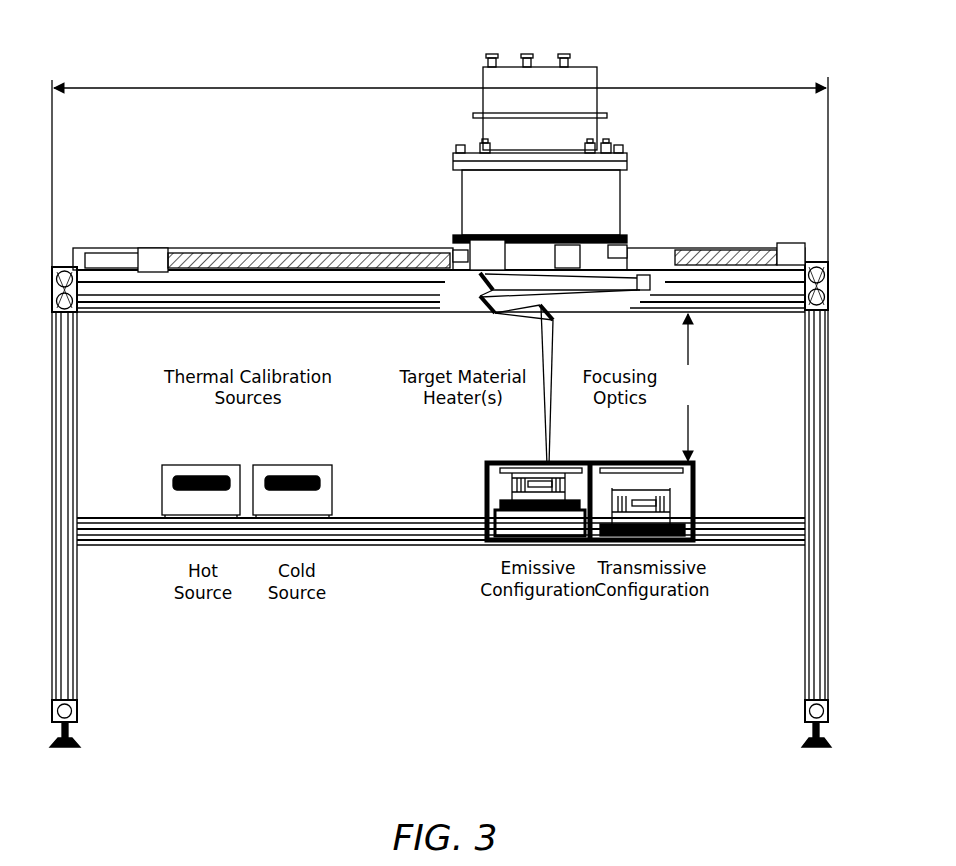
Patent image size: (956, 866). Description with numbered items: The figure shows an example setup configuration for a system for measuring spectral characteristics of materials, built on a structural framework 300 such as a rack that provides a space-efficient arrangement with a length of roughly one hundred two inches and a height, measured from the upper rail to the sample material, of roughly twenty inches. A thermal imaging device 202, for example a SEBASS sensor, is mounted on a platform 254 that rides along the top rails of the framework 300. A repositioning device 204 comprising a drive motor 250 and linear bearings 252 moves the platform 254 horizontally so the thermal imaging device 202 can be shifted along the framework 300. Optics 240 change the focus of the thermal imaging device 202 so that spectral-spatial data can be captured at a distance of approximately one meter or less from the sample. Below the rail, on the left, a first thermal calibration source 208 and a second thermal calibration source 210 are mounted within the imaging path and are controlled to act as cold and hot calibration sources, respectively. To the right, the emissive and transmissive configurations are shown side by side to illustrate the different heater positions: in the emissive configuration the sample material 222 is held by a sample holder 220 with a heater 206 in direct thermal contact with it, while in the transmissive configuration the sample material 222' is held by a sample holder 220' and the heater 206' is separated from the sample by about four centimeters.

The structural framework 300 is at (248, 48).
The repositioning device 204 is at (261, 175).
The bearings 252 is at (318, 248).
The platform 254 is at (626, 230).
The drive motor 250 is at (633, 180).
The thermal imaging device 202 is at (609, 128).
The optics 240 is at (586, 326).
The sample holder 220 is at (565, 488).
The sample material 222 is at (498, 451).
The heater 206 is at (500, 499).
The sample holder 220' is at (677, 486).
The sample material 222' is at (641, 472).
The heater 206' is at (683, 489).
The second thermal calibration source 210 is at (185, 463).
The first thermal calibration source 208 is at (276, 463).